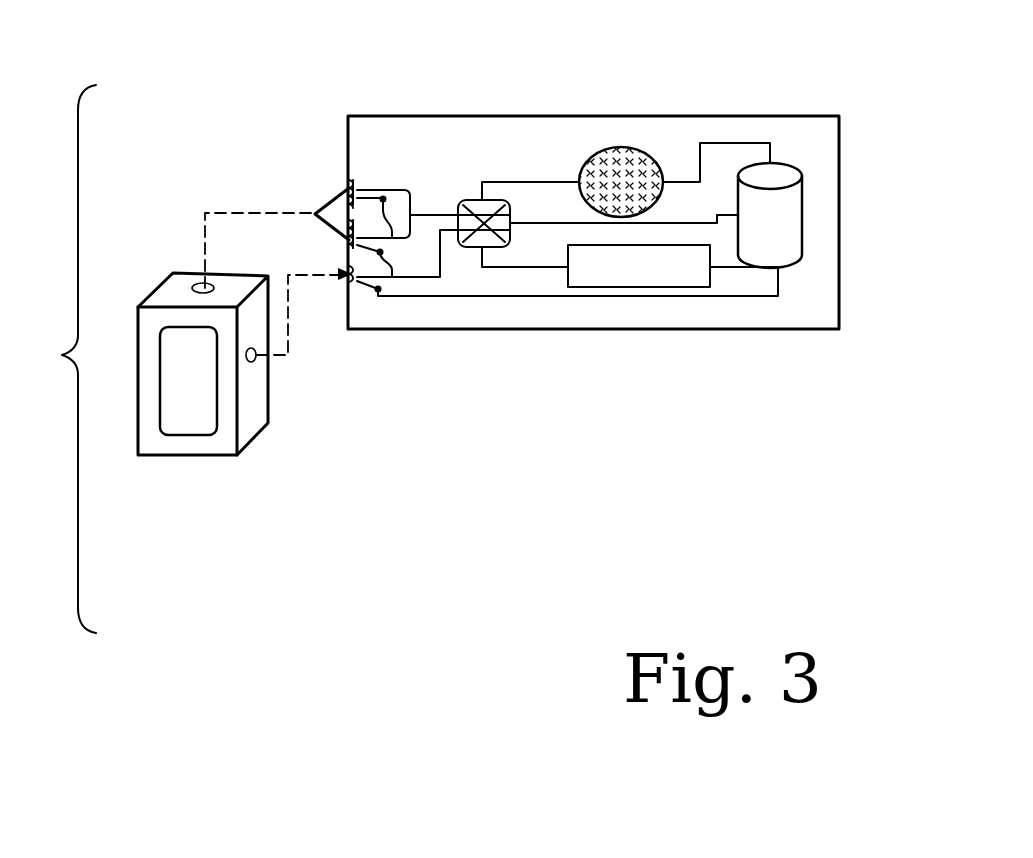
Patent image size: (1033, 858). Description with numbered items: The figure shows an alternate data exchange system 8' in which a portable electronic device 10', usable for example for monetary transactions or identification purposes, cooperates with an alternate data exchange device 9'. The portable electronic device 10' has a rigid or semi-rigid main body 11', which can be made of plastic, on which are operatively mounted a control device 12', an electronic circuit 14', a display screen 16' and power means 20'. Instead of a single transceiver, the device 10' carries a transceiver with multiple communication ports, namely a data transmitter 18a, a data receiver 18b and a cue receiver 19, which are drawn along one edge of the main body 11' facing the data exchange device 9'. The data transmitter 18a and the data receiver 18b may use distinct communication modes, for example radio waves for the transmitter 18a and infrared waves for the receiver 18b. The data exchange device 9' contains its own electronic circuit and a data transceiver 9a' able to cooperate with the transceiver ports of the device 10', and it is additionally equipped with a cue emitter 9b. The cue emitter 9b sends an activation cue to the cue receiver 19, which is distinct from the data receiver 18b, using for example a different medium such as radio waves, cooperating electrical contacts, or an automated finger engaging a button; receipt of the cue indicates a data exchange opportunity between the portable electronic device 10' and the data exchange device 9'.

The data exchange system 8' is at (57, 359).
The data exchange device 9' is at (203, 421).
The data transceiver 9a' is at (152, 256).
The cue emitter 9b is at (256, 363).
The portable electronic device 10' is at (308, 121).
The main body 11' is at (593, 272).
The control device 12' is at (666, 144).
The electronic circuit 14' is at (549, 174).
The display screen 16' is at (639, 318).
The data transmitter 18a is at (349, 184).
The data receiver 18b is at (348, 248).
The cue receiver 19 is at (351, 278).
The power means 20' is at (817, 215).